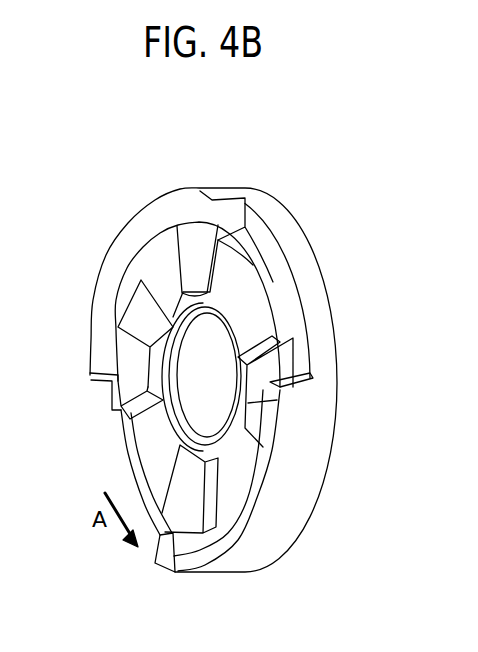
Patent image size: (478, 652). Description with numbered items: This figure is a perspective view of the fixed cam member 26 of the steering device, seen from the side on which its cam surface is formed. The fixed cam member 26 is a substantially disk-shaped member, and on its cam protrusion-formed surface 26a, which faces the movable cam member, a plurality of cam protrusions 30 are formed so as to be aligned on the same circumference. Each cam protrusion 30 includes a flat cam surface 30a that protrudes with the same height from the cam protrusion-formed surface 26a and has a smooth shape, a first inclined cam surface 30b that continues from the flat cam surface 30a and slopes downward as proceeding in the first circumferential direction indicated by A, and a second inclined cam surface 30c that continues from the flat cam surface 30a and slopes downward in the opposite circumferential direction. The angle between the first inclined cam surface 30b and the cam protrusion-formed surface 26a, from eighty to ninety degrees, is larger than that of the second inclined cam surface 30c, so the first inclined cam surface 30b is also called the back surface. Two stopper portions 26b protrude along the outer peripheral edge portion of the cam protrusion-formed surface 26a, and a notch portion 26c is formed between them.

The fixed cam member 26 is at (277, 175).
The cam protrusion-formed surface 26a is at (148, 440).
The stopper portion 26b is at (140, 223).
The notch portion 26c is at (105, 439).
The cam protrusion 30 is at (215, 240).
The flat cam surface 30a is at (192, 250).
The first inclined cam surface 30b is at (180, 267).
The second inclined cam surface 30c is at (147, 303).